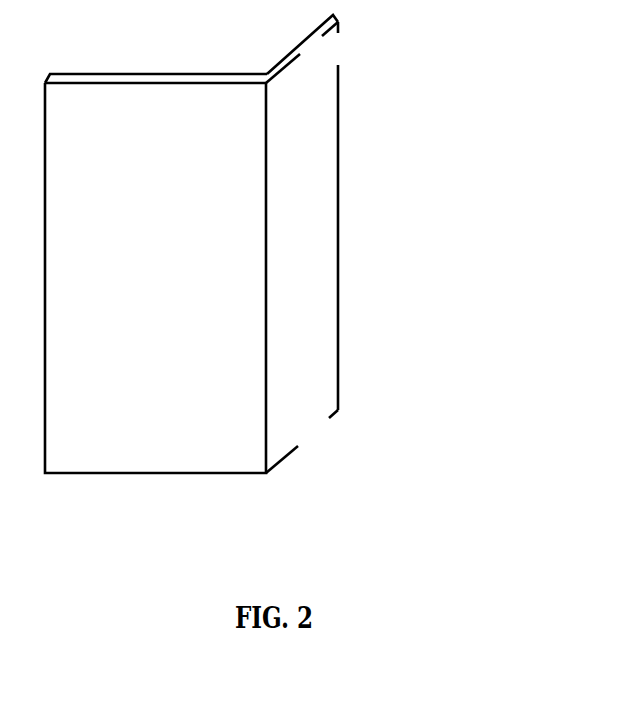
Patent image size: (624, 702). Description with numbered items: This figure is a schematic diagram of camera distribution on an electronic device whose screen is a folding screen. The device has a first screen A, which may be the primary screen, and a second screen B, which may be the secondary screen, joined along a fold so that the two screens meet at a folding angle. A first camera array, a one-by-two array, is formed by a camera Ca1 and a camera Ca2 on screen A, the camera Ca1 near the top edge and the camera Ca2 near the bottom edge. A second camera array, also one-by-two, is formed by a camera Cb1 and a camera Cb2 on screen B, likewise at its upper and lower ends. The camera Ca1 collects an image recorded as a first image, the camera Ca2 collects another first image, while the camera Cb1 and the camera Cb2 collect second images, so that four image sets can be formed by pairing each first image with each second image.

The camera Ca1 is at (204, 85).
The camera Cb1 is at (396, 98).
The camera Ca2 is at (80, 503).
The camera Cb2 is at (387, 480).
The screen A is at (150, 302).
The screen B is at (301, 302).